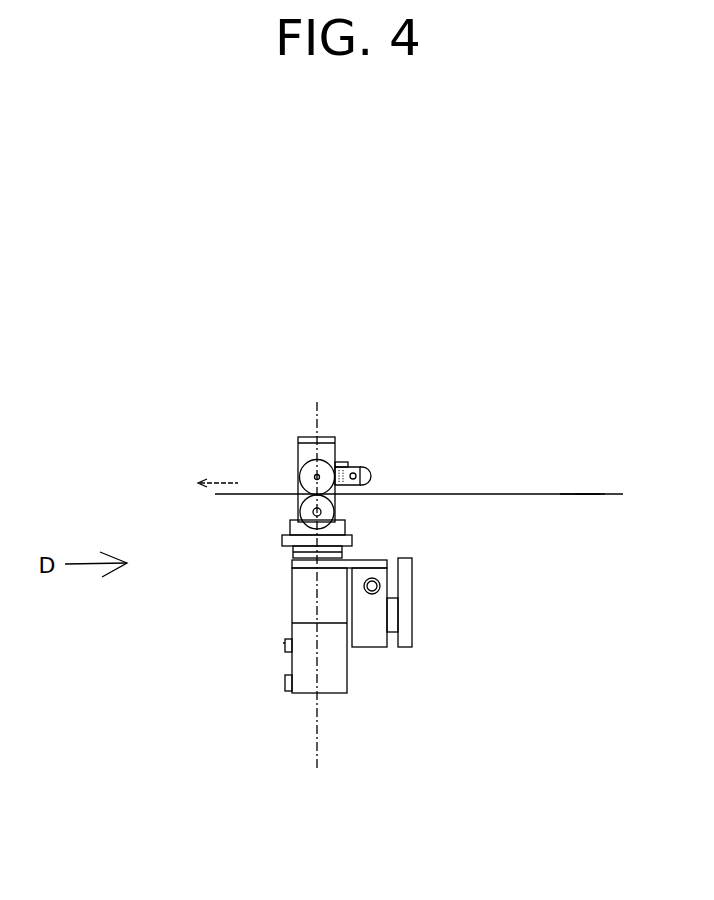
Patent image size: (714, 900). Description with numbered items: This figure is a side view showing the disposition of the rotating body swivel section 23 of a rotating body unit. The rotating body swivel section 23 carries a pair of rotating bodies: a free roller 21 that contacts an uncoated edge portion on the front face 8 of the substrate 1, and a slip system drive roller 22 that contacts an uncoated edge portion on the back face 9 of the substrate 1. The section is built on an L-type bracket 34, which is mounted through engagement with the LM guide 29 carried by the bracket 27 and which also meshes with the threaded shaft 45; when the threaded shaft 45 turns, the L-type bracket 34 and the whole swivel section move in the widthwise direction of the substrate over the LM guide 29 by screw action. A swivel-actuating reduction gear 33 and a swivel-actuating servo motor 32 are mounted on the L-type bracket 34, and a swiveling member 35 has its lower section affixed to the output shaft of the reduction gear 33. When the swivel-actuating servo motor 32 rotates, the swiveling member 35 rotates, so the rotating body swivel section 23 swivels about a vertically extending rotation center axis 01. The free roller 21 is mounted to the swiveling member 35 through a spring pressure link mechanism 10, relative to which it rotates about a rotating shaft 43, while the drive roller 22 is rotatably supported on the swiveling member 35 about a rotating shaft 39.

The substrate 1 is at (533, 491).
The front face 8 is at (572, 493).
The back face 9 is at (590, 495).
The spring pressure link mechanism 10 is at (347, 461).
The free roller 21 is at (299, 458).
The drive roller 22 is at (301, 513).
The rotating body swivel section 23 is at (251, 476).
The bracket 27 is at (412, 590).
The LM guide 29 is at (393, 620).
The swivel-actuating servo motor 32 is at (297, 698).
The swivel-actuating reduction gear 33 is at (292, 602).
The L-type bracket 34 is at (377, 648).
The swiveling member 35 is at (287, 547).
The rotating shaft 39 is at (321, 512).
The rotating shaft 43 is at (315, 476).
The threaded shaft 45 is at (375, 578).
The rotation center axis 01 is at (318, 585).